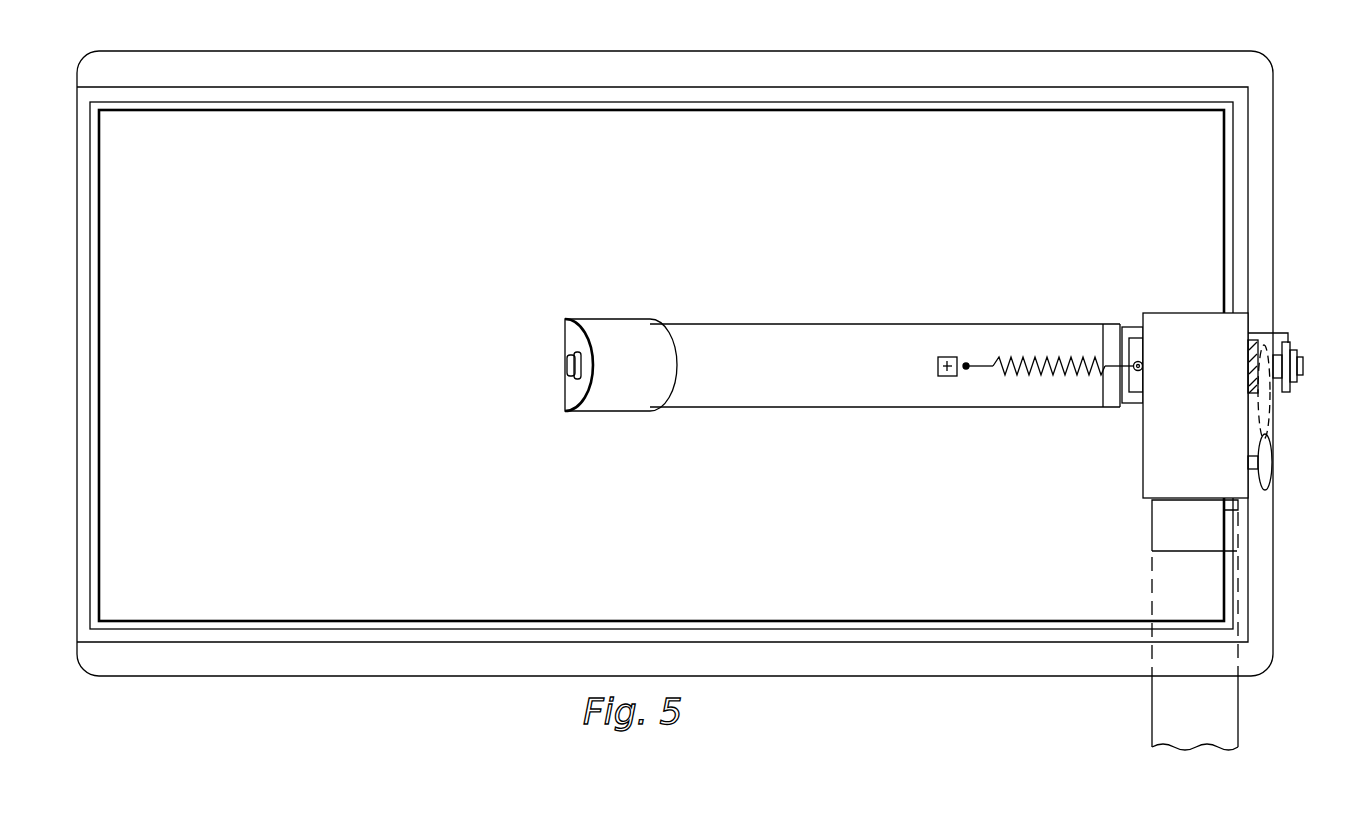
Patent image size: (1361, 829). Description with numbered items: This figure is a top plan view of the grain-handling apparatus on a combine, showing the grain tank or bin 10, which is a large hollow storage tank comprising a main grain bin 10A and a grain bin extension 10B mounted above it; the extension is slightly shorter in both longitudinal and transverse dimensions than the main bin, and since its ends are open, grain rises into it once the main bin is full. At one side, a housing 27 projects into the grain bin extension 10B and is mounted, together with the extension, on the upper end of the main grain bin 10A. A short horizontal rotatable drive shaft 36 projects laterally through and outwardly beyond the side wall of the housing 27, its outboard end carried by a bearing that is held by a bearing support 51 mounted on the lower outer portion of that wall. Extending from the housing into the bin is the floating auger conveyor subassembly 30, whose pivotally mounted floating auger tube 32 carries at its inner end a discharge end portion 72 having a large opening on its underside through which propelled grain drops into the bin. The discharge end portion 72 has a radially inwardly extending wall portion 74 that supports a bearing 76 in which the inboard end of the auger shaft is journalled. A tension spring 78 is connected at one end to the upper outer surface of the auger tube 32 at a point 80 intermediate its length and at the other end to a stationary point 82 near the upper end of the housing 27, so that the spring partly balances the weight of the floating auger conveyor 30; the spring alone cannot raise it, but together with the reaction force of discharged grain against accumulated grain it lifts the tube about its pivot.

The grain tank or bin 10 is at (418, 684).
The main grain bin 10A is at (218, 665).
The grain bin extension 10B is at (556, 636).
The housing 27 is at (1214, 433).
The floating auger conveyor subassembly 30 is at (836, 345).
The floating auger tube 32 is at (857, 330).
The rotatable drive shaft 36 is at (1299, 360).
The bearing support 51 is at (1282, 332).
The discharge end portion 72 is at (583, 370).
The radially inwardly extending wall portion 74 is at (574, 340).
The bearing 76 is at (583, 362).
The tension spring 78 is at (1050, 366).
The point 80 is at (968, 365).
The stationary point 82 is at (1140, 361).